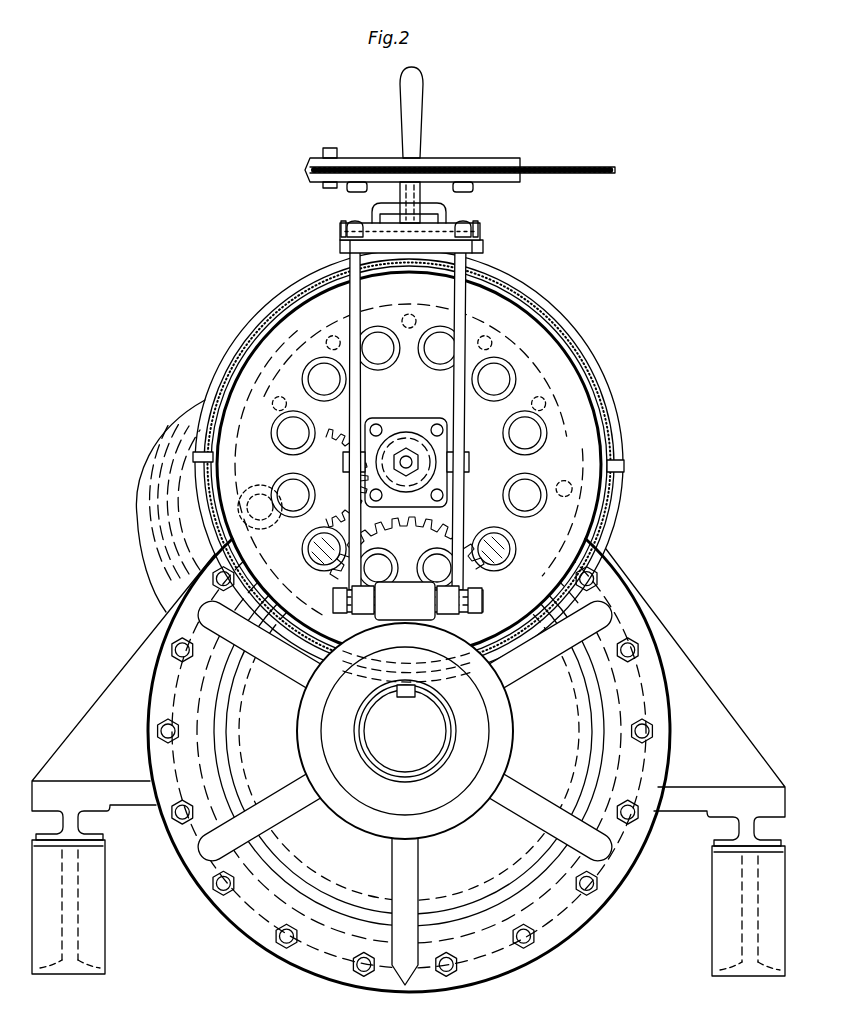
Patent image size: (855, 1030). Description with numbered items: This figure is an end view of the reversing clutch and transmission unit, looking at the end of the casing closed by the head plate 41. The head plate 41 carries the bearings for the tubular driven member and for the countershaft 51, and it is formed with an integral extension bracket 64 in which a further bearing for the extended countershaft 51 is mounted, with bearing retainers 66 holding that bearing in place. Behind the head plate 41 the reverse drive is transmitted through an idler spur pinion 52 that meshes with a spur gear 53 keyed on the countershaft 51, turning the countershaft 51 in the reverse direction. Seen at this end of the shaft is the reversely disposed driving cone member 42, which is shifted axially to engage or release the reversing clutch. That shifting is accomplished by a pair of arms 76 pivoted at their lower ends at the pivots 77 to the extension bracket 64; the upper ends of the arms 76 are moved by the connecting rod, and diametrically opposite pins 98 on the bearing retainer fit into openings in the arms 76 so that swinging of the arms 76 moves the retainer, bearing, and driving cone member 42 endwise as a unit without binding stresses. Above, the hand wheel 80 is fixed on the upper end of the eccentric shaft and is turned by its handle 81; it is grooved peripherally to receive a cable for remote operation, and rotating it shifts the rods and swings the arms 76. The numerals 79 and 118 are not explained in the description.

The head plate 41 is at (318, 968).
The driving cone member 42 is at (562, 357).
The countershaft 51 is at (412, 762).
The idler spur pinion 52 is at (215, 573).
The spur gear 53 is at (360, 605).
The extension bracket 64 is at (457, 819).
The bearing retainers 66 is at (362, 822).
The arms 76 is at (474, 271).
The pivots 77 is at (475, 608).
The yoke 79 is at (443, 232).
The hand wheel 80 is at (471, 154).
The handle 81 is at (414, 97).
The pins 98 is at (345, 464).
The pinion 118 is at (442, 532).